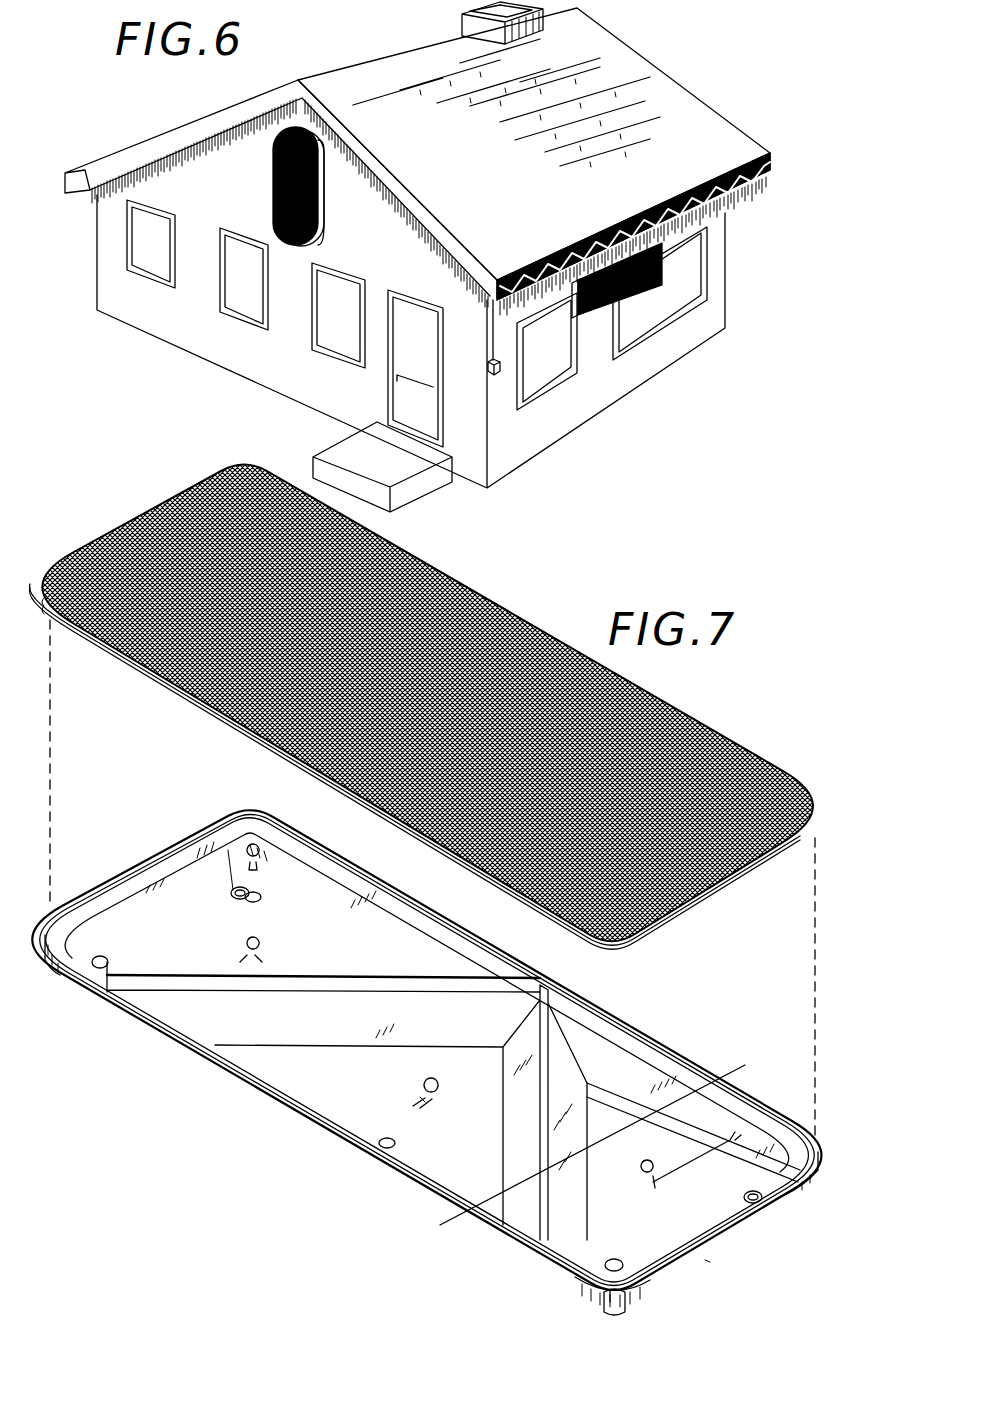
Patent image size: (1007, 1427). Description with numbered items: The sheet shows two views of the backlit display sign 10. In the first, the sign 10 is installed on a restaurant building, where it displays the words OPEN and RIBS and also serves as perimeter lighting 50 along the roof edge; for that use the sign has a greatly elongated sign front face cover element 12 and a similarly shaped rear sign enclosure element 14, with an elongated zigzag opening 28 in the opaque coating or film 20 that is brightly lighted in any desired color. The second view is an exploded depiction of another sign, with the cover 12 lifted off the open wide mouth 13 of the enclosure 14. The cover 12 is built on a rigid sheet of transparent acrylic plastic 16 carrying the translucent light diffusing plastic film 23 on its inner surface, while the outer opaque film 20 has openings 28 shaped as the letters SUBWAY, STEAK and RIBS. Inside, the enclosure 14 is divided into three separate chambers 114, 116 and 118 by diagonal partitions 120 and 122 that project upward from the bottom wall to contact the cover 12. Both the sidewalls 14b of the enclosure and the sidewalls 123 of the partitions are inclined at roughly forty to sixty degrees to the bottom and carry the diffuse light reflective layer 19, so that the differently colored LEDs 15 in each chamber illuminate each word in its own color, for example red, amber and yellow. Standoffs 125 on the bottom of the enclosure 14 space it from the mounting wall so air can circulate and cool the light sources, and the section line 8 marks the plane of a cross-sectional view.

In FIG. 7, the section line 8- 8 is at (448, 1232).
In FIG. 6, the backlit display sign 10 is at (258, 216).
In FIG. 7, the sign front face cover element 12 is at (30, 598).
In FIG. 7, the open wide mouth 13 is at (108, 878).
In FIG. 6, the rear sign enclosure element 14 is at (322, 180).
In FIG. 7, the rear sign enclosure element 14 is at (426, 1056).
In FIG. 7, the sidewalls 14b is at (404, 948).
In FIG. 7, the LED 15 is at (248, 948).
In FIG. 6, the rigid sheet of transparent acrylic plastic 16 is at (628, 293).
In FIG. 7, the rigid sheet of transparent acrylic plastic 16 is at (110, 650).
In FIG. 7, the diffuse light reflective layer 19 is at (183, 870).
In FIG. 6, the opaque coating or film 20 is at (268, 200).
In FIG. 7, the opaque coating or film 20 is at (421, 697).
In FIG. 7, the translucent light diffusing plastic film 23 is at (168, 690).
In FIG. 6, the openings 28 is at (255, 130).
In FIG. 6, the perimeter lighting 50 is at (752, 191).
In FIG. 7, the chamber 114 is at (268, 920).
In FIG. 7, the chamber 116 is at (420, 1097).
In FIG. 7, the chamber 118 is at (663, 1222).
In FIG. 7, the diagonal partition 120 is at (343, 980).
In FIG. 7, the diagonal partition 122 is at (425, 1180).
In FIG. 7, the sidewalls of the partitions 123 is at (520, 1058).
In FIG. 7, the standoffs 125 is at (233, 888).